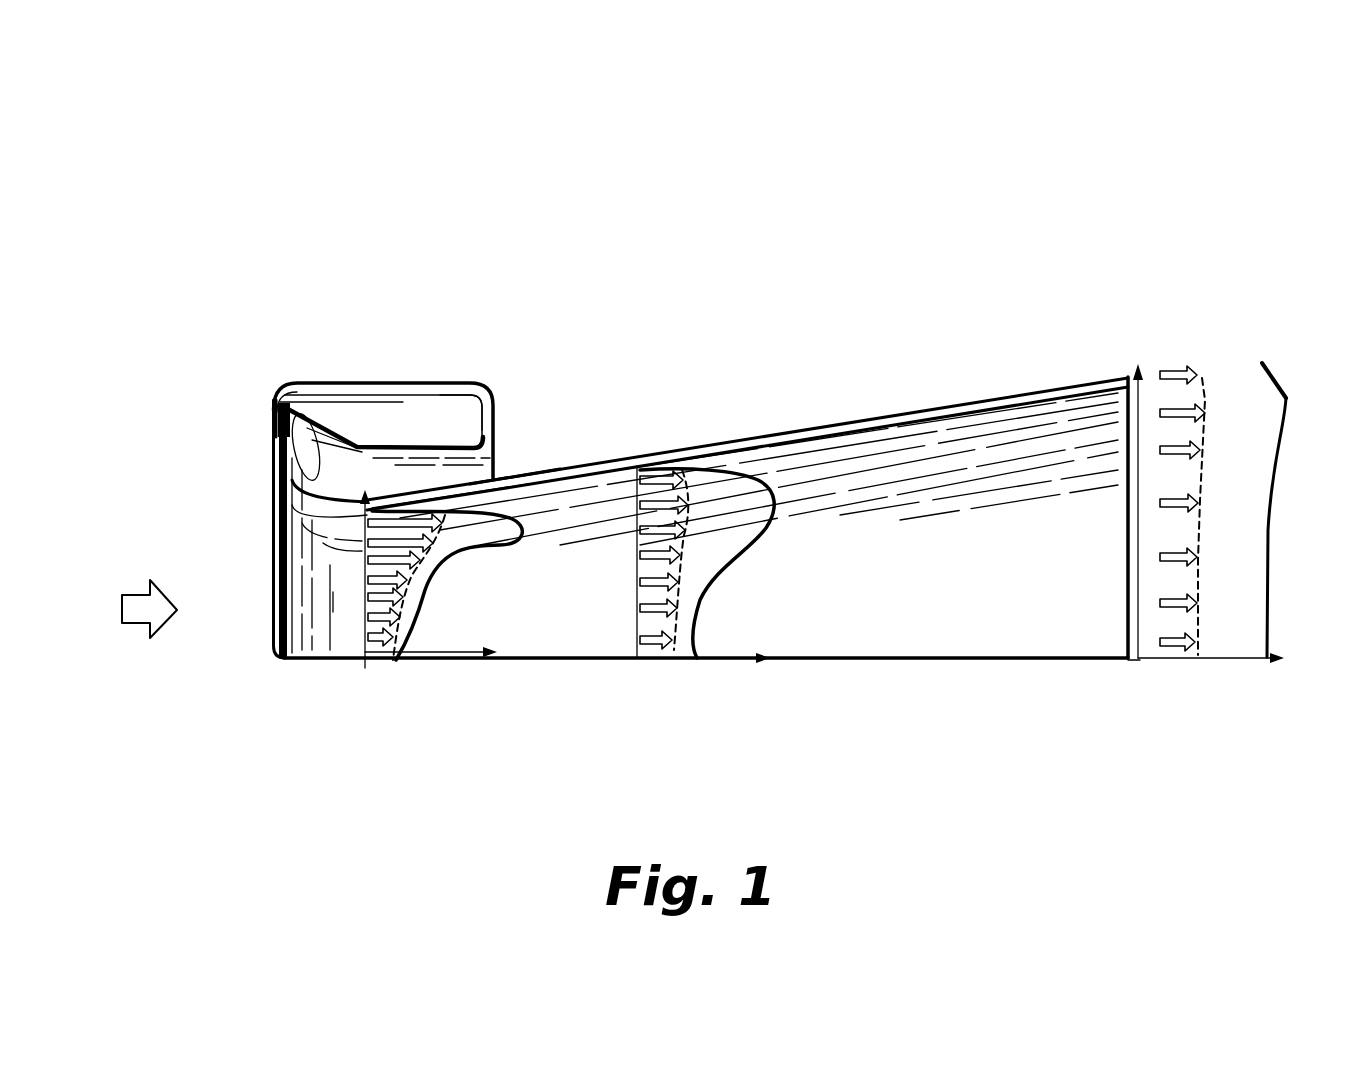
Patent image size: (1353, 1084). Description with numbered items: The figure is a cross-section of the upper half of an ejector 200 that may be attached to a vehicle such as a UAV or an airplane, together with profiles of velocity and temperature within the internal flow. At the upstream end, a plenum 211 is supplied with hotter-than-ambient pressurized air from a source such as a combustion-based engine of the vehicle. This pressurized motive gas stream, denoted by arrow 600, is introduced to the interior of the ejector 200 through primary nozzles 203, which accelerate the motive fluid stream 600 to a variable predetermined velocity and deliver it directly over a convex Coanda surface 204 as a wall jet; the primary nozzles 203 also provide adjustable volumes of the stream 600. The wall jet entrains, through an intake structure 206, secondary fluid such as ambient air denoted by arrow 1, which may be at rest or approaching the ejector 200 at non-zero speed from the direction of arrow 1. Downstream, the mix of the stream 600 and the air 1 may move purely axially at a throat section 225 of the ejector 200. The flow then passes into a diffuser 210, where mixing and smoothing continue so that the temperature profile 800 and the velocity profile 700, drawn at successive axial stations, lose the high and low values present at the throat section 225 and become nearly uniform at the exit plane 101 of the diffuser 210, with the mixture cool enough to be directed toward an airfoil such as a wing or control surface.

The ejector 200 is at (428, 204).
The primary nozzles 203 is at (273, 450).
The convex Coanda surface 204 is at (293, 420).
The intake structure 206 is at (273, 414).
The motive fluid stream 600 is at (305, 420).
The plenum 211 is at (448, 428).
The throat section 225 is at (368, 494).
The diffuser 210 is at (495, 482).
The temperature profile 800 is at (577, 467).
The velocity profile 700 is at (417, 642).
The outlet 101 is at (1130, 670).
The ambient air 1 is at (140, 600).